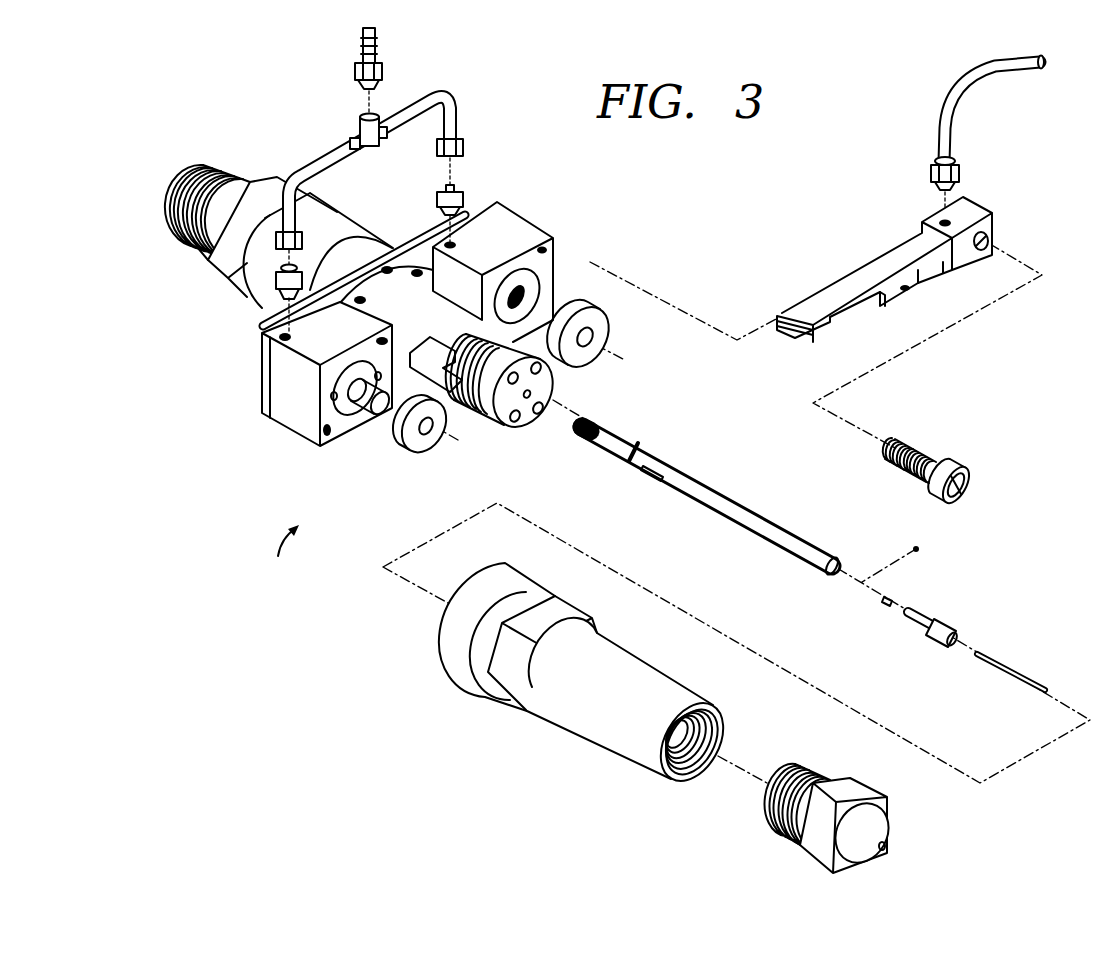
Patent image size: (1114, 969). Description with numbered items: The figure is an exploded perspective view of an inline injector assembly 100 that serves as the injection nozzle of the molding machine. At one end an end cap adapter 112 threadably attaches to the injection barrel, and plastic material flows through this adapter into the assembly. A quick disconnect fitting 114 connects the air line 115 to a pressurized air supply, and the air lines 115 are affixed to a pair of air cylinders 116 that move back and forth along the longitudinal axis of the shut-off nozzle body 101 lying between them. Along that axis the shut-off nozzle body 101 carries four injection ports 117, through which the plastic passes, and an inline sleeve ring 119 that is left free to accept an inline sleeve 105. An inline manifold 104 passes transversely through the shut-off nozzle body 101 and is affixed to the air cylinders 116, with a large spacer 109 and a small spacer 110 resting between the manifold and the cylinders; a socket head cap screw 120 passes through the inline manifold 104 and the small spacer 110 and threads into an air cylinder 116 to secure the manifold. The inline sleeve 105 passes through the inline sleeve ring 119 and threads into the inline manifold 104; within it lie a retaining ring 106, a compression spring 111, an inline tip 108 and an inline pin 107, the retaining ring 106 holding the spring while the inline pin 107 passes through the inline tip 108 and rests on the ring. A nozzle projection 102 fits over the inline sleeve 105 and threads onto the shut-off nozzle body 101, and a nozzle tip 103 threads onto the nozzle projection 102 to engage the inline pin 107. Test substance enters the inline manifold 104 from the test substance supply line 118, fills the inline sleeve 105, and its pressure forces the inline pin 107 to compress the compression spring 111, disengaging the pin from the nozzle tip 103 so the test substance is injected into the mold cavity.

The inline injector assembly 100 is at (286, 548).
The shut-off nozzle body 101 is at (406, 292).
The nozzle projection 102 is at (608, 722).
The nozzle tip 103 is at (872, 828).
The inline manifold 104 is at (869, 273).
The inline sleeve 105 is at (776, 530).
The retaining ring 106 is at (948, 634).
The inline pin 107 is at (993, 658).
The inline tip 108 is at (916, 547).
The large spacer 109 is at (414, 447).
The small spacer 110 is at (598, 321).
The compression spring 111 is at (888, 604).
The end cap adapter 112 is at (231, 288).
The quick disconnect fitting 114 is at (362, 52).
The air line 115 is at (441, 96).
The air cylinder 116 is at (525, 233).
The injection port 117 is at (495, 423).
The test substance supply line 118 is at (957, 120).
The inline sleeve ring 119 is at (545, 383).
The socket head cap screw 120 is at (966, 490).